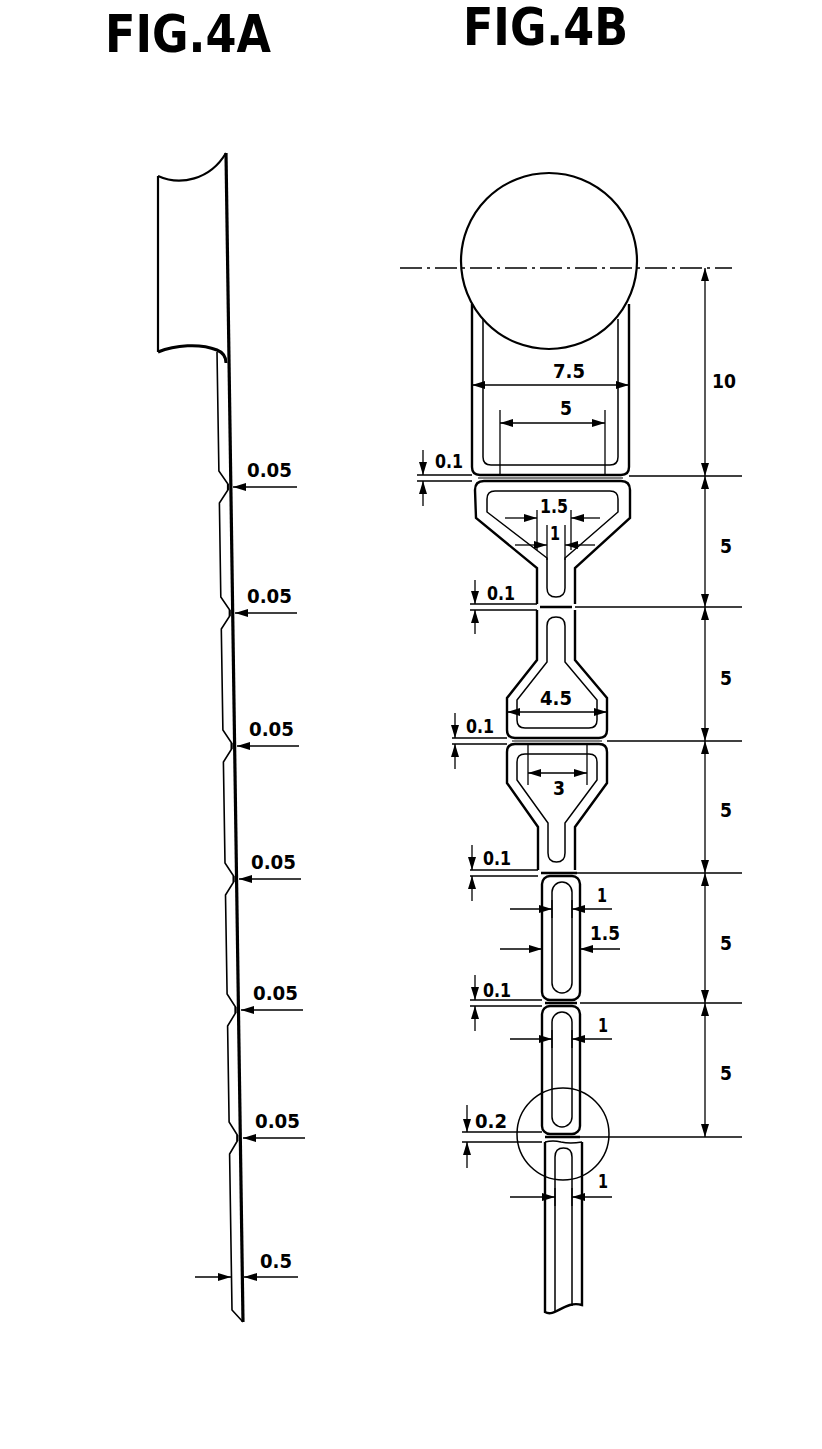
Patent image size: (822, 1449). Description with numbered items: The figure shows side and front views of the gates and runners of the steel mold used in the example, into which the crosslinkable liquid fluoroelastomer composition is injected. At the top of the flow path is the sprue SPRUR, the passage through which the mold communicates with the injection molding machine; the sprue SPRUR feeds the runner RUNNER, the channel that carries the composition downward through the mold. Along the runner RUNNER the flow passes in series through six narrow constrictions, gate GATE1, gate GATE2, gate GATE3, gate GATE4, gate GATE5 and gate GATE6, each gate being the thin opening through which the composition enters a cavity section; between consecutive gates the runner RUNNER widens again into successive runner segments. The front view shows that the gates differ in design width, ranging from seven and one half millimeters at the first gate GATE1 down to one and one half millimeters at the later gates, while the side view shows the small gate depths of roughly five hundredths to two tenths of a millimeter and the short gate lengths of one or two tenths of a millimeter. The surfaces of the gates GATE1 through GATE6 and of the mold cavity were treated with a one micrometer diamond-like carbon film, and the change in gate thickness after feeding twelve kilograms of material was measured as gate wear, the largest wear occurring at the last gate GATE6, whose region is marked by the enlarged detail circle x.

In FIG. 4A, the sprue SPRUR is at (181, 262).
In FIG. 4B, the sprue SPRUR is at (598, 220).
In FIG. 4A, the runner RUNNER is at (223, 421).
In FIG. 4B, the runner RUNNER is at (477, 414).
In FIG. 4A, the gate (1) GATE1 is at (228, 487).
In FIG. 4A, the gate (2) GATE2 is at (230, 613).
In FIG. 4A, the gate (3) GATE3 is at (232, 746).
In FIG. 4A, the gate (4) GATE4 is at (234, 879).
In FIG. 4A, the gate (5) GATE5 is at (236, 1010).
In FIG. 4A, the gate (6) GATE6 is at (238, 1138).
In FIG. 4B, the enlarged portion x is at (605, 1112).